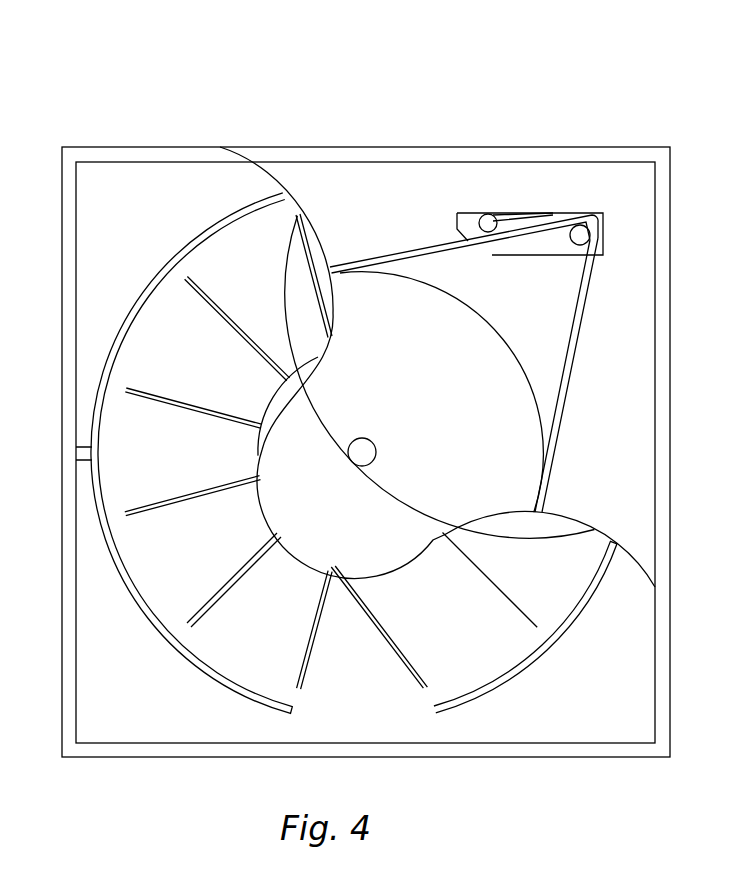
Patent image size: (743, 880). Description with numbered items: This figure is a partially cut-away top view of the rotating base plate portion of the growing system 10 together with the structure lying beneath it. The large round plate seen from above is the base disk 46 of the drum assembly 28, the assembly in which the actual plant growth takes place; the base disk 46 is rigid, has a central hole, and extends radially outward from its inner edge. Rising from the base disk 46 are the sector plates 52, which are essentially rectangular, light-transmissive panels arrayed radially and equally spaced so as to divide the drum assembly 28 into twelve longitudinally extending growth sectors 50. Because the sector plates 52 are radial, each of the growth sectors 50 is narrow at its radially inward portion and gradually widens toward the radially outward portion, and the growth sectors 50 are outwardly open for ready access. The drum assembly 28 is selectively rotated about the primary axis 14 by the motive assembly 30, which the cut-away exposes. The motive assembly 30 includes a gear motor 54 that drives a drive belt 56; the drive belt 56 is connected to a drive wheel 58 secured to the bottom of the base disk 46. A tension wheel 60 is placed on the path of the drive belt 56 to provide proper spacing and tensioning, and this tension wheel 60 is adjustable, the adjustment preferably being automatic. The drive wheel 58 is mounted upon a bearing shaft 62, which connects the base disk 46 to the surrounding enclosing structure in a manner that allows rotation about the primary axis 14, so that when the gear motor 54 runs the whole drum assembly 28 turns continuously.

The growing system 10 is at (332, 118).
The primary axis 14 is at (358, 440).
The drum assembly 28 is at (165, 600).
The motive assembly 30 is at (564, 186).
The base disk 46 is at (268, 293).
The growth sectors 50 is at (382, 648).
The sector plates 52 is at (192, 340).
The gear motor 54 is at (603, 220).
The drive belt 56 is at (587, 275).
The drive wheel 58 is at (515, 351).
The tension wheel 60 is at (472, 218).
The bearing shaft 62 is at (358, 466).